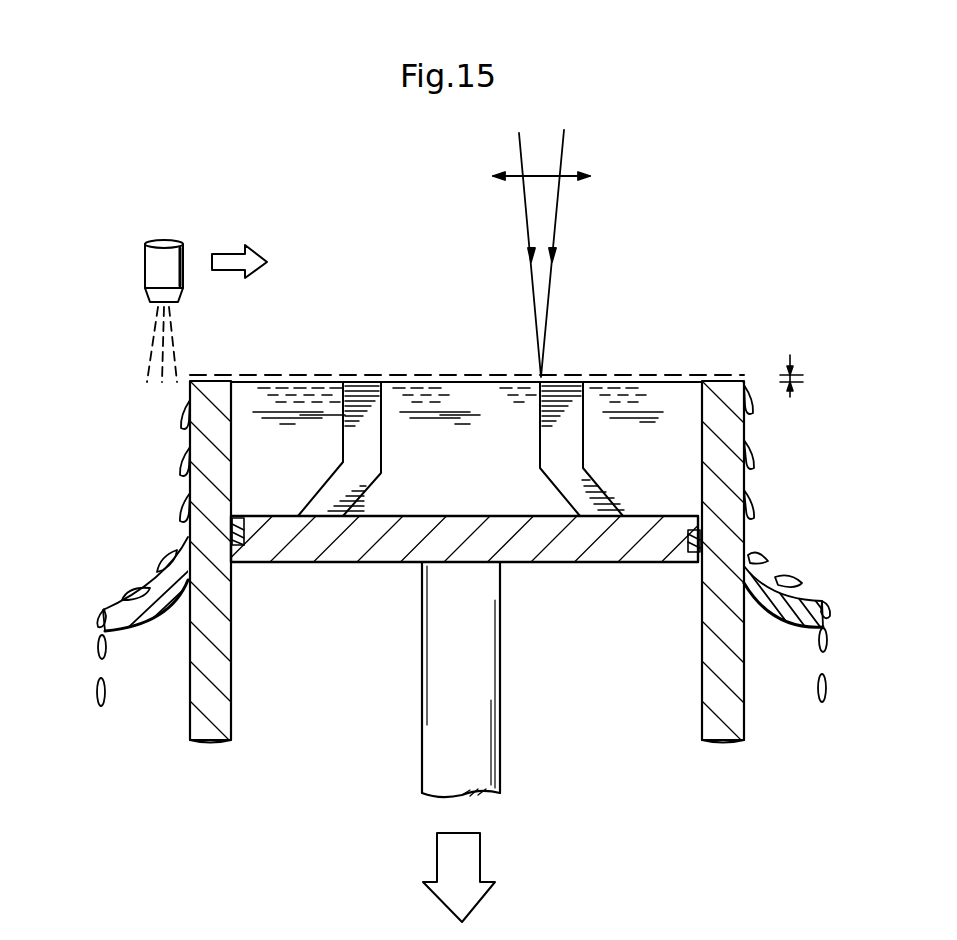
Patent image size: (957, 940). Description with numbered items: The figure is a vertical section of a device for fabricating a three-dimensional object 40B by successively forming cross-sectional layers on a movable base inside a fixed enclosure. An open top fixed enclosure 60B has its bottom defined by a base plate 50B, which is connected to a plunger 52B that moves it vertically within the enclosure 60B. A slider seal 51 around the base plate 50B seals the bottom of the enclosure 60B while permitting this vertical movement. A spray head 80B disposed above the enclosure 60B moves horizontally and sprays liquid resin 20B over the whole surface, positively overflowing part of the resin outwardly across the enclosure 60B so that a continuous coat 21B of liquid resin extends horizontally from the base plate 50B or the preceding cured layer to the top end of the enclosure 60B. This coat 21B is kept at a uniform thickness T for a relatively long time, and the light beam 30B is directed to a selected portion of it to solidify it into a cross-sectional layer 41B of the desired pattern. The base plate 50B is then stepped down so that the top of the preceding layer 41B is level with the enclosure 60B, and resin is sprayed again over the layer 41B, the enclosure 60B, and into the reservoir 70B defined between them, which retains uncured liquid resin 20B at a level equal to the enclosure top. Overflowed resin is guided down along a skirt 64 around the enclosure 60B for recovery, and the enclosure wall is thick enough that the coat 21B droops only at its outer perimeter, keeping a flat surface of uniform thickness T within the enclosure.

The spray head 80B is at (155, 268).
The liquid resin 20B is at (172, 345).
The continuous coat of liquid resin 21B is at (413, 375).
The light beam 30B is at (547, 225).
The cross-sectional layer 41B is at (578, 387).
The three-dimensional object 40B is at (368, 487).
The reservoir 70B is at (248, 445).
The fixed enclosure 60B is at (722, 495).
The slider seal 51 is at (235, 536).
The skirt 64 is at (128, 612).
The base plate 50B is at (312, 555).
The plunger 52B is at (475, 720).
The uniform thickness T is at (800, 377).